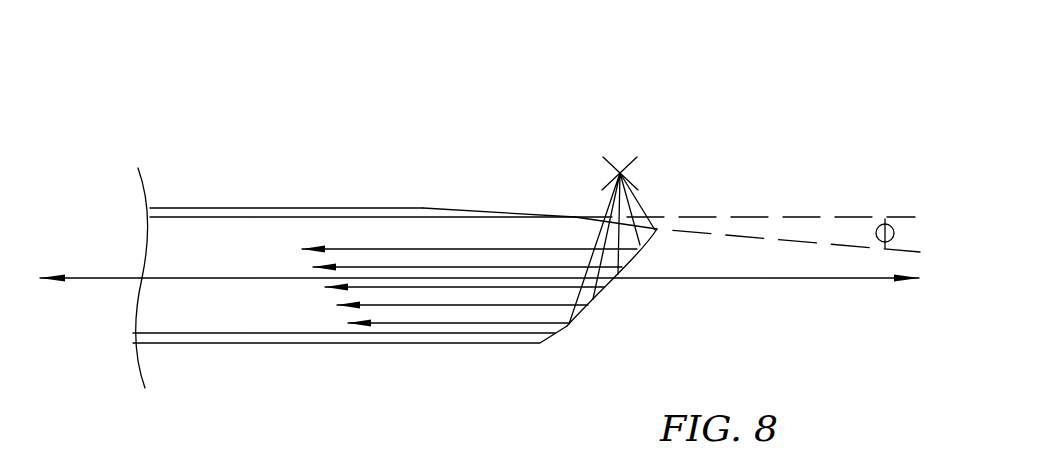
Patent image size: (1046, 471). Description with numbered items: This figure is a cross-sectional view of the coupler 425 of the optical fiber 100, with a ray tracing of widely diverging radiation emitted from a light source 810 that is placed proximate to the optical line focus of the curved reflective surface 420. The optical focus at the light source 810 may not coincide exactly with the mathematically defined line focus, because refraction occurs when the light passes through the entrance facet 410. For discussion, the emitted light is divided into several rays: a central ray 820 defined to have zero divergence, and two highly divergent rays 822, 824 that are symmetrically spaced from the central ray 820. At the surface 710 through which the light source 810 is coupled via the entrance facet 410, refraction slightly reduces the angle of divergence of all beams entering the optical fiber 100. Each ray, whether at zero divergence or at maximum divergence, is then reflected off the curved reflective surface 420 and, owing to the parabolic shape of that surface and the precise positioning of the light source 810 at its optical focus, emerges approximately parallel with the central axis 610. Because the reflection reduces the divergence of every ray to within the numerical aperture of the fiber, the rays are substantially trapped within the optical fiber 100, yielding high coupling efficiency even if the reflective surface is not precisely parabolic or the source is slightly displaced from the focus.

The optical fiber 100 is at (215, 257).
The entrance facet 410 is at (525, 216).
The curved reflective surface 420 is at (604, 296).
The coupler 425 is at (718, 113).
The central axis 610 is at (117, 278).
The surface 710 is at (590, 217).
The light source 810 is at (620, 172).
The central ray 820 is at (617, 208).
The highly divergent ray 822 is at (632, 211).
The highly divergent ray 824 is at (597, 215).